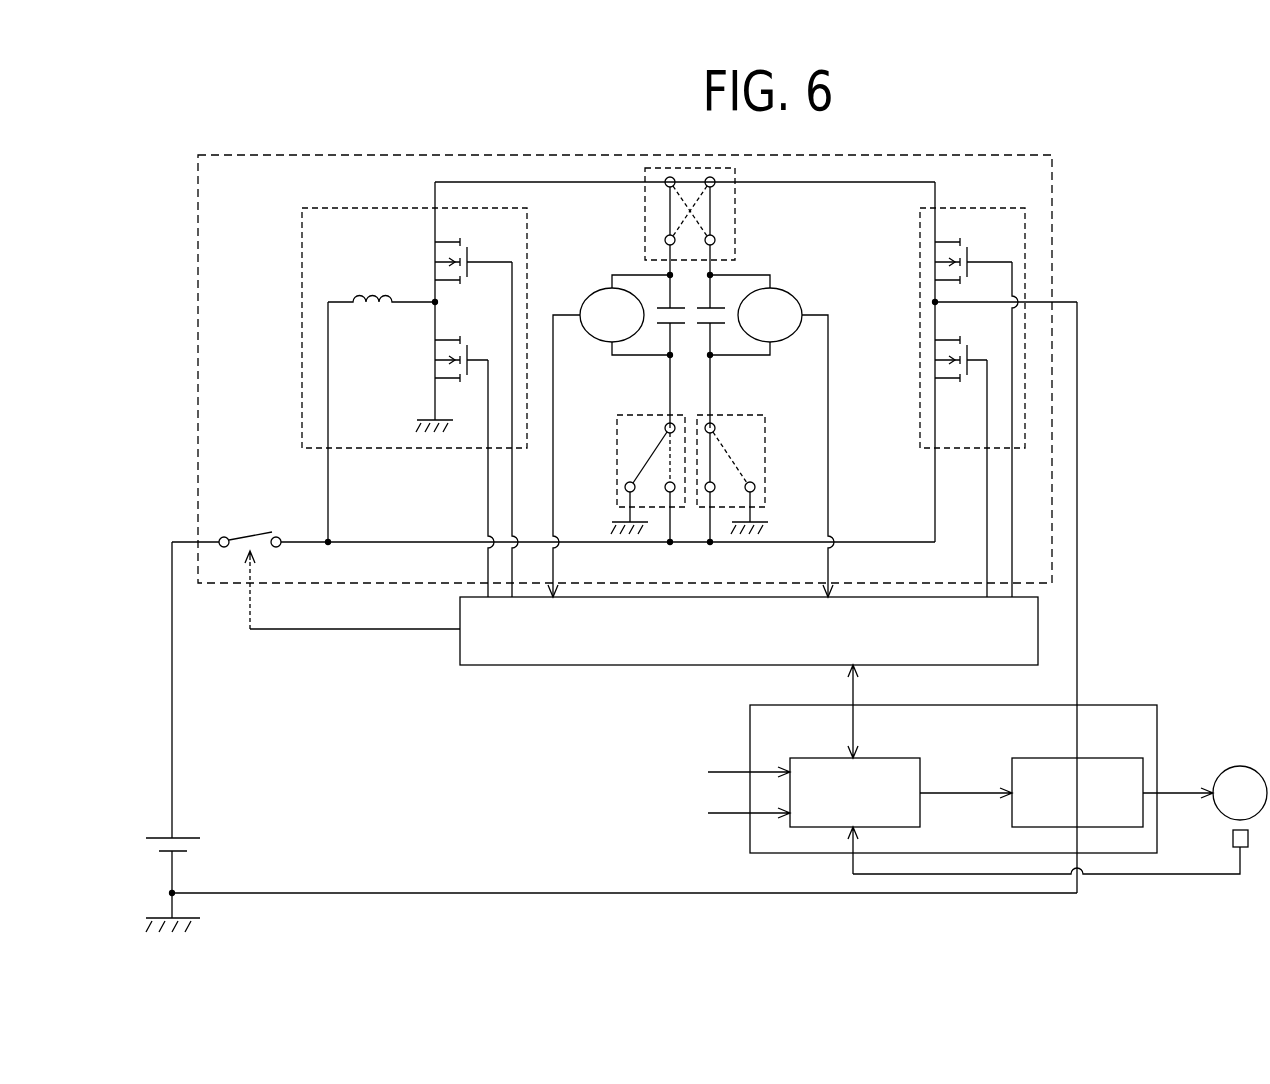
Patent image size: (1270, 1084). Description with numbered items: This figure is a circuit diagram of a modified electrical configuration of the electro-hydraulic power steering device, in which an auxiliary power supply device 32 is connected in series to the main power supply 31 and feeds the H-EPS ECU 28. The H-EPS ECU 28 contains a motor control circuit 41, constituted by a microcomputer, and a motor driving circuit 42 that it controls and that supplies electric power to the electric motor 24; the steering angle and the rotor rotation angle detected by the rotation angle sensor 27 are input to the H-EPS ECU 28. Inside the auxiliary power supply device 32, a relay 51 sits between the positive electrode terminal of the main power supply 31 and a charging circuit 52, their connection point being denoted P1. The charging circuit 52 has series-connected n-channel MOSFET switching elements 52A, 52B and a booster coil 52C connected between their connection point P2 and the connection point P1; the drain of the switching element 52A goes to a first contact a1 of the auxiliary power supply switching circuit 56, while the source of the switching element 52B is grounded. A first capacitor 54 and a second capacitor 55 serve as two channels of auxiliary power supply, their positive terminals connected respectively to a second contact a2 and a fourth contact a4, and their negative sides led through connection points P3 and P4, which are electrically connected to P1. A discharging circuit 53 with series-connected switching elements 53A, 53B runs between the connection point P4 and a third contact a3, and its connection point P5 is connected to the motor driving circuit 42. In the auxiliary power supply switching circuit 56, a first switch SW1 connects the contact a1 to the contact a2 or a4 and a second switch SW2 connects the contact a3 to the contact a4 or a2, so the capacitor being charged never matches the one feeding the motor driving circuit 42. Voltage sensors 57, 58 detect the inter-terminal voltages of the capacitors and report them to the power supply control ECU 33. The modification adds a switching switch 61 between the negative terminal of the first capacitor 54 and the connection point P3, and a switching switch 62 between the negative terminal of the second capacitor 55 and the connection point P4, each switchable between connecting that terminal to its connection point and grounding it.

The electric motor 24 is at (1240, 766).
The rotation angle sensor 27 is at (1232, 838).
The H-EPS ECU 28 is at (750, 718).
The main power supply 31 is at (188, 836).
The auxiliary power supply device 32 is at (1053, 180).
The power supply control ECU 33 is at (498, 667).
The motor control circuit 41 is at (805, 758).
The motor driving circuit 42 is at (1105, 758).
The relay 51 is at (246, 537).
The charging circuit 52 is at (301, 243).
The switching element 52A is at (435, 268).
The switching element 52B is at (435, 366).
The booster coil 52C is at (372, 309).
The discharging circuit 53 is at (1026, 233).
The switching element 53A is at (935, 268).
The switching element 53B is at (935, 366).
The first capacitor 54 is at (665, 328).
The second capacitor 55 is at (716, 328).
The auxiliary power supply switching circuit 56 is at (728, 168).
The voltage sensor 57 is at (600, 343).
The voltage sensor 58 is at (782, 343).
The switching switch 61 is at (616, 430).
The switching switch 62 is at (766, 430).
The connection point P1 is at (331, 540).
The connection point P2 is at (438, 302).
The connection point P3 is at (668, 545).
The connection point P4 is at (712, 545).
The connection point P5 is at (933, 302).
The first contact a1 is at (665, 184).
The second contact a2 is at (665, 241).
The third contact a3 is at (715, 184).
The fourth contact a4 is at (715, 241).
The first switch SW1 is at (668, 210).
The second switch SW2 is at (712, 210).